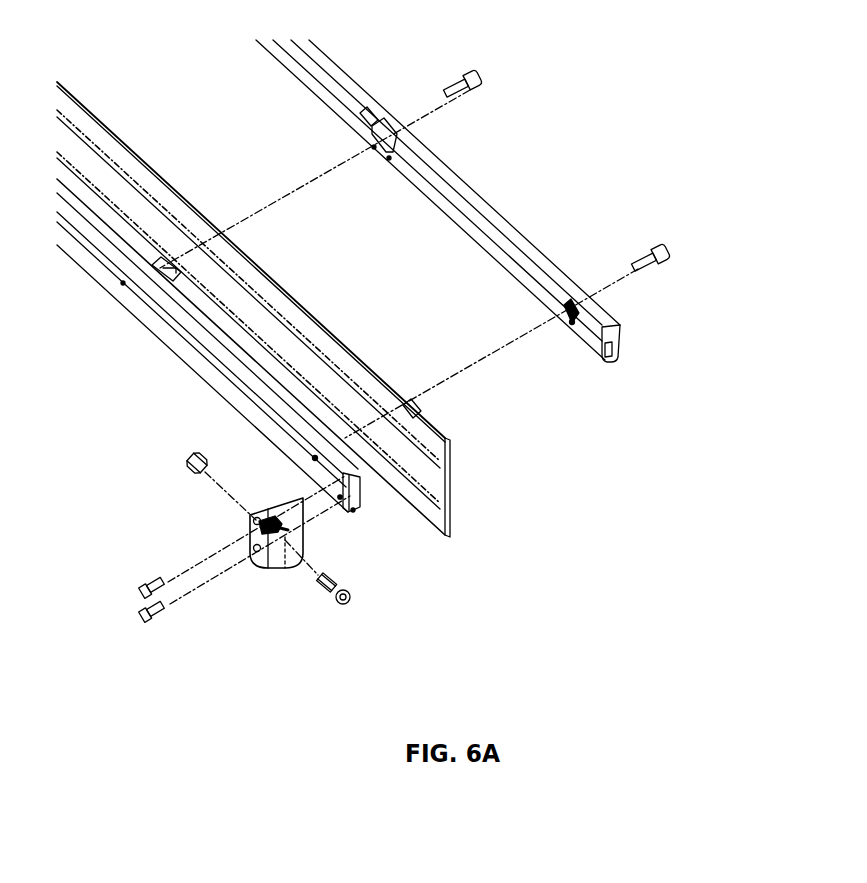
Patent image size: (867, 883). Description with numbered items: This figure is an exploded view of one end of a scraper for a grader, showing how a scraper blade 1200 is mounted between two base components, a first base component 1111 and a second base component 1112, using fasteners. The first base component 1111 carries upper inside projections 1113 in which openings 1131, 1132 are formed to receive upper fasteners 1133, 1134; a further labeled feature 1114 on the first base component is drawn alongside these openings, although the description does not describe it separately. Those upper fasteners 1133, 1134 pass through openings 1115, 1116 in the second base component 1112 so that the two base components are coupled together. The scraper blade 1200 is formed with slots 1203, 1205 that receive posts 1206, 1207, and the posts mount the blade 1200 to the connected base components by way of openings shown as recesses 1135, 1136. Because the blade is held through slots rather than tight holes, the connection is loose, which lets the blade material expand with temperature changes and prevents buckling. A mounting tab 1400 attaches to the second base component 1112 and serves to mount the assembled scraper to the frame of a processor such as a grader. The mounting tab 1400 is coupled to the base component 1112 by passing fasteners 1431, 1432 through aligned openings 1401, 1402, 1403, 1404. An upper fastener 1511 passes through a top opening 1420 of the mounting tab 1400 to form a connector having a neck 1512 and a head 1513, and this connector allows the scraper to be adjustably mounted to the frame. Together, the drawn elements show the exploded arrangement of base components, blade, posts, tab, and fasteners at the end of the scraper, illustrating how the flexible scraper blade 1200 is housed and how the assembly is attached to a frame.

The first base component 1111 is at (622, 323).
The second base component 1112 is at (167, 335).
The upper inside projections 1113 is at (600, 358).
The mounting hole 1114 is at (389, 160).
The opening 1115 is at (313, 458).
The opening 1116 is at (123, 283).
The opening 1131 is at (560, 310).
The opening 1132 is at (380, 140).
The upper fastener 1133 is at (658, 246).
The upper fastener 1134 is at (480, 78).
The recess 1135 is at (566, 326).
The recess 1136 is at (373, 148).
The scraper blade 1200 is at (452, 480).
The slot 1203 is at (424, 408).
The slot 1205 is at (228, 246).
The post 1206 is at (377, 468).
The post 1207 is at (163, 266).
The mounting tab 1400 is at (293, 567).
The opening 1401 is at (254, 525).
The opening 1402 is at (258, 553).
The opening 1403 is at (352, 512).
The opening 1404 is at (340, 500).
The top opening 1420 is at (267, 517).
The fastener 1431 is at (142, 581).
The fastener 1432 is at (147, 622).
The upper fastener 1511 is at (195, 452).
The neck 1512 is at (336, 578).
The head 1513 is at (344, 605).